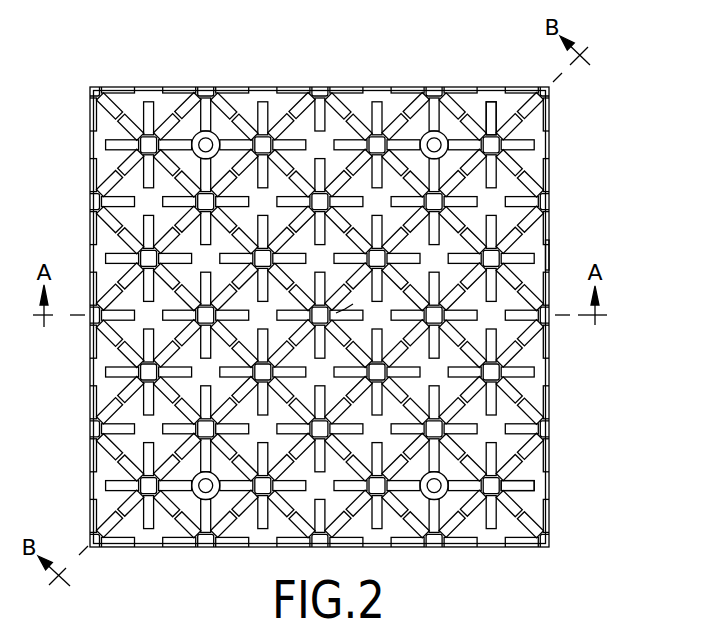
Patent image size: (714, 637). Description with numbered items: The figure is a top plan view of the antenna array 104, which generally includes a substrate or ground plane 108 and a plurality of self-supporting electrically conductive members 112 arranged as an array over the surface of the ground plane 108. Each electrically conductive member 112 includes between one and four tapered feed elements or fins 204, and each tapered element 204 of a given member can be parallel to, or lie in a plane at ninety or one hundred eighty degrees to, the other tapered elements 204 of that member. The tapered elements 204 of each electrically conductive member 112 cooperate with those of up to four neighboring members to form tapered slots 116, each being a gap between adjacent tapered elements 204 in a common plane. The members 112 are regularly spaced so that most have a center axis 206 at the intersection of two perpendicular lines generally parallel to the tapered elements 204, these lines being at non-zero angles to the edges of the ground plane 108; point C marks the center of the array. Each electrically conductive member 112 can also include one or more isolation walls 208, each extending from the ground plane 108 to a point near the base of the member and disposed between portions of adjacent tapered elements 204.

The antenna array 104 is at (352, 319).
The ground plane 108 is at (362, 317).
The electrically conductive member 112 is at (550, 269).
The tapered slot 116 is at (437, 100).
The tapered element 204 is at (528, 321).
The center axis 206 is at (310, 227).
The isolation wall 208 is at (555, 298).